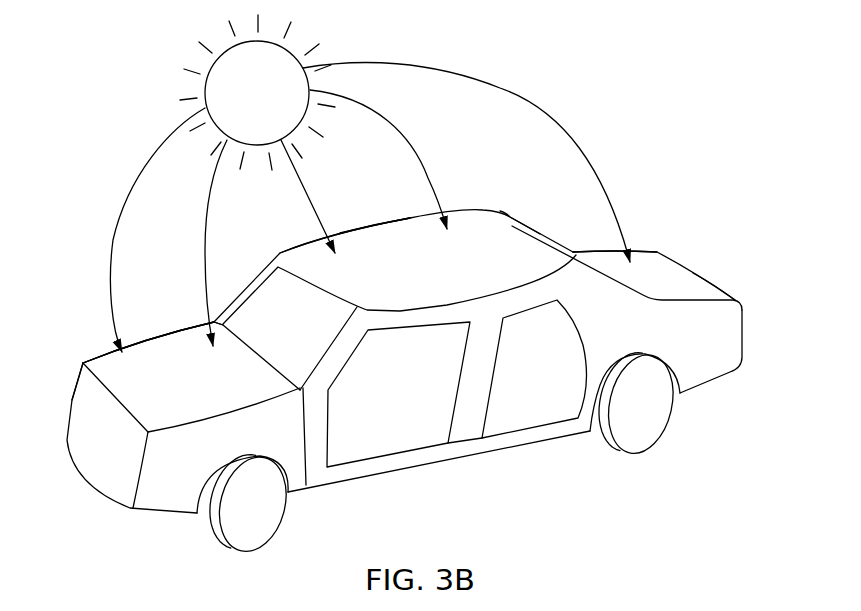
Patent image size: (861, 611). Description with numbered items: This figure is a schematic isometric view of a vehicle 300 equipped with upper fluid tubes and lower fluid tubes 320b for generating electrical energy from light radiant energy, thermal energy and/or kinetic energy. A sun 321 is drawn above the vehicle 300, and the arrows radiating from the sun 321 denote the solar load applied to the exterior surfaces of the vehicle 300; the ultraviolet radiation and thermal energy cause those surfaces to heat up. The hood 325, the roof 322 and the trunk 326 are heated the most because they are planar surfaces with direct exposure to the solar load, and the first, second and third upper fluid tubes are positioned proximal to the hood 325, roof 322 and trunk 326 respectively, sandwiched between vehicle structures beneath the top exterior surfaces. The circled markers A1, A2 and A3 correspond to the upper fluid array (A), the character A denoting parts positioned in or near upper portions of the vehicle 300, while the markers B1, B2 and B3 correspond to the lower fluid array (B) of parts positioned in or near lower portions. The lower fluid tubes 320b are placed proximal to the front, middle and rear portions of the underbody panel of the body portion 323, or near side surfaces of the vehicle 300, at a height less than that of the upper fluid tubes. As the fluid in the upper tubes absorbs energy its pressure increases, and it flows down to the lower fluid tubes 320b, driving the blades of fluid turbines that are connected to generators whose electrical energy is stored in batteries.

The vehicle 300 is at (118, 525).
The sun 321 is at (205, 89).
The roof 322 is at (363, 232).
The body portion 323 is at (92, 467).
The hood 325 is at (188, 328).
The trunk 326 is at (711, 290).
The lower fluid tube 320b is at (498, 447).
The sunlit area on hood A1 is at (145, 352).
The sunlit area on roof A2 is at (390, 237).
The sunlit area on trunk A3 is at (656, 262).
The shaded area at front door B1 is at (299, 477).
The shaded area at rear door B2 is at (470, 440).
The shaded area at rear quarter B3 is at (705, 365).